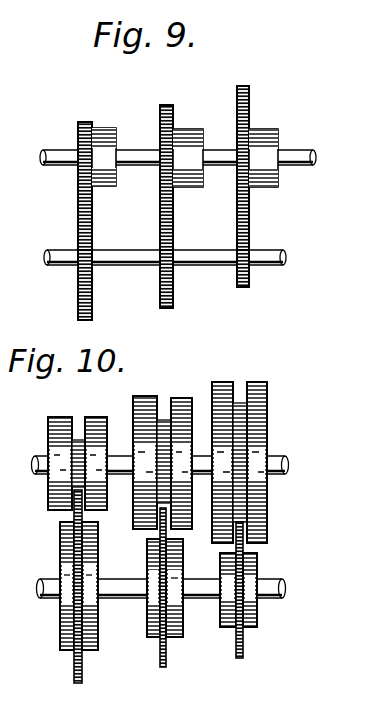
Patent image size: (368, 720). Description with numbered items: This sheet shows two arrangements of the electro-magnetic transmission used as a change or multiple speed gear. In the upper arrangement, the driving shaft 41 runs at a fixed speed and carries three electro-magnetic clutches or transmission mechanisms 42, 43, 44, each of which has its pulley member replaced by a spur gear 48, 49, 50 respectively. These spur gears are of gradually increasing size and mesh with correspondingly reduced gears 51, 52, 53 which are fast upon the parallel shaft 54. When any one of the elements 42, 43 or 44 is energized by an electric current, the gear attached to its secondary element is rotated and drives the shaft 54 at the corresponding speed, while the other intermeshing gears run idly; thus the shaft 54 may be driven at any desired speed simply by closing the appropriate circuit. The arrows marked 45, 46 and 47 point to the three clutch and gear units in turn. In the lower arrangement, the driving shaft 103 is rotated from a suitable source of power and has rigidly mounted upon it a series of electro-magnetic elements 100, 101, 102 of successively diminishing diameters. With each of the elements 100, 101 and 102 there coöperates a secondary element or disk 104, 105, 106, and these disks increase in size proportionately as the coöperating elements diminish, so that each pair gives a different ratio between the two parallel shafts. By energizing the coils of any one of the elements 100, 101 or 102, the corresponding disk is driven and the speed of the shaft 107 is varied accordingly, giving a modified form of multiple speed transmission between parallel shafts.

In FIG. 9, the driving shaft 41 is at (312, 152).
In FIG. 9, the electro-magnetic clutch 42 is at (106, 188).
In FIG. 9, the electro-magnetic clutch 43 is at (193, 129).
In FIG. 9, the electro-magnetic clutch 44 is at (292, 112).
In FIG. 9, the gear unit 45 is at (85, 210).
In FIG. 9, the gear unit 46 is at (170, 205).
In FIG. 9, the gear unit 47 is at (262, 191).
In FIG. 9, the spur gear 48 is at (85, 121).
In FIG. 9, the spur gear 49 is at (167, 104).
In FIG. 9, the spur gear 50 is at (244, 86).
In FIG. 9, the gear 51 is at (92, 312).
In FIG. 9, the gear 52 is at (167, 308).
In FIG. 9, the gear 53 is at (243, 287).
In FIG. 9, the shaft 54 is at (283, 259).
In FIG. 10, the electro-magnetic element 100 is at (262, 408).
In FIG. 10, the electro-magnetic element 101 is at (157, 400).
In FIG. 10, the electro-magnetic element 102 is at (71, 418).
In FIG. 10, the driving shaft 103 is at (286, 460).
In FIG. 10, the secondary element or disk 104 is at (244, 645).
In FIG. 10, the secondary element or disk 105 is at (167, 665).
In FIG. 10, the secondary element or disk 106 is at (81, 678).
In FIG. 10, the shaft 107 is at (283, 585).